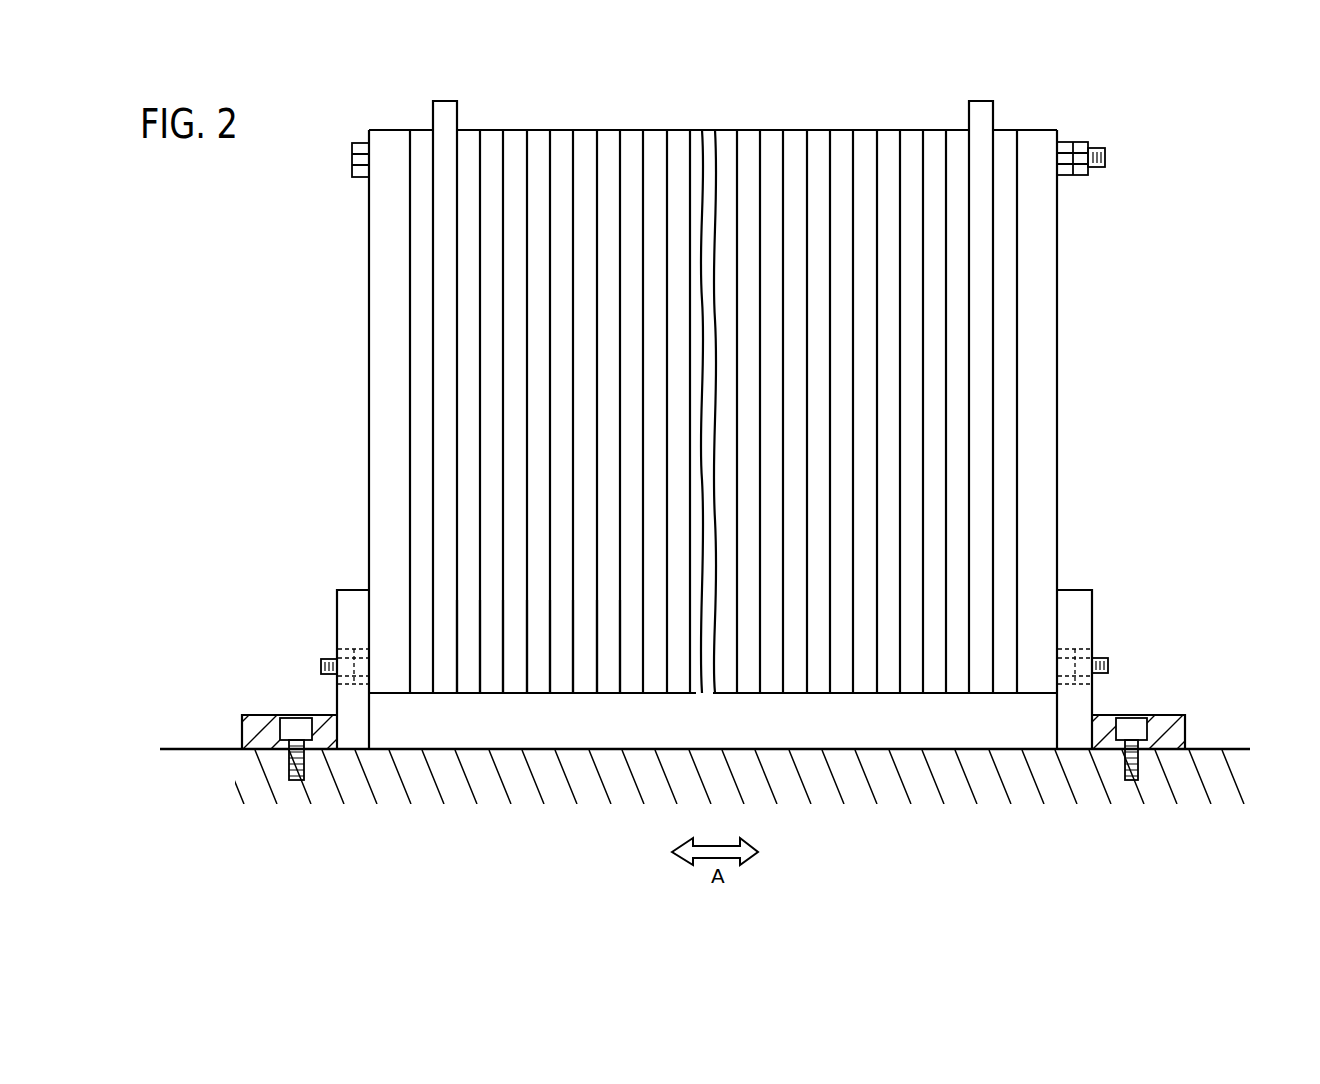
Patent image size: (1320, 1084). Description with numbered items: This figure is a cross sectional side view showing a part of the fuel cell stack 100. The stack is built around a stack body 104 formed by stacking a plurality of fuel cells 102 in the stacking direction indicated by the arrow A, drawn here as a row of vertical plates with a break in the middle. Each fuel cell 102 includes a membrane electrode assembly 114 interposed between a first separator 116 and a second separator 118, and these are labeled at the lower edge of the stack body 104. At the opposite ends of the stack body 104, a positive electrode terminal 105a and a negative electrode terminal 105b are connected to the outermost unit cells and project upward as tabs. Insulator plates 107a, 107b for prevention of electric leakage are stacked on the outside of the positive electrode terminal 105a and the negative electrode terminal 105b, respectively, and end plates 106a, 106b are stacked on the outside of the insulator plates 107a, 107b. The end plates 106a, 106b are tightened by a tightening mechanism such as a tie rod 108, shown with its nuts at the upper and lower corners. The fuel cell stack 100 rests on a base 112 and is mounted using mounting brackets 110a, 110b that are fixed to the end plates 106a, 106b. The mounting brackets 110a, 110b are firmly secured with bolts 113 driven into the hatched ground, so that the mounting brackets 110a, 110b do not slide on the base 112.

The fuel cell stack 100 is at (985, 45).
The fuel cell 102 is at (613, 131).
The stack body 104 is at (817, 93).
The positive electrode terminal 105a is at (447, 112).
The negative electrode terminal 105b is at (975, 116).
The end plate 106a is at (390, 140).
The end plate 106b is at (1045, 140).
The insulator plate 107a is at (422, 140).
The insulator plate 107b is at (1007, 140).
The tie rod 108 is at (352, 158).
The mounting bracket 110a is at (248, 733).
The mounting bracket 110b is at (1180, 730).
The base 112 is at (942, 767).
The bolt 113 is at (298, 728).
The membrane electrode assembly 114 is at (492, 678).
The first separator 116 is at (517, 676).
The second separator 118 is at (466, 676).